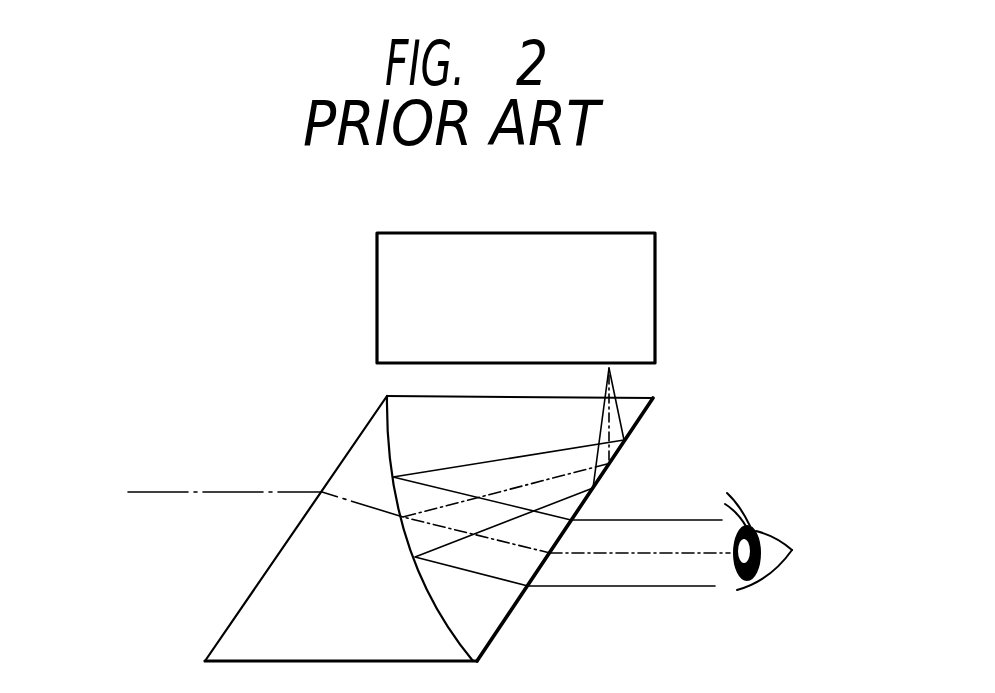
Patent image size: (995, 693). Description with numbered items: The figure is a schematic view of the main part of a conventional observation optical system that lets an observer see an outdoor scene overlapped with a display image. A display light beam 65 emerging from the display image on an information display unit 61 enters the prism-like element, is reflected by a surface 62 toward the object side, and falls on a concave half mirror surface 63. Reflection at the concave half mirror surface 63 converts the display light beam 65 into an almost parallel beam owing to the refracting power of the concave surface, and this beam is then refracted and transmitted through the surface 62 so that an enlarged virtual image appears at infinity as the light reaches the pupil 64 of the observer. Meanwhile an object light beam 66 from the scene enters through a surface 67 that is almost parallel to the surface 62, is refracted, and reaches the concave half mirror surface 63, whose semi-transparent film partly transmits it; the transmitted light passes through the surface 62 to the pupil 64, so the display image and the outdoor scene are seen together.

The information display unit 61 is at (377, 265).
The surface 62 is at (517, 607).
The concave half mirror surface 63 is at (386, 432).
The pupil 64 is at (768, 532).
The display light beam 65 is at (615, 425).
The object light beam 66 is at (182, 490).
The surface 67 is at (242, 606).